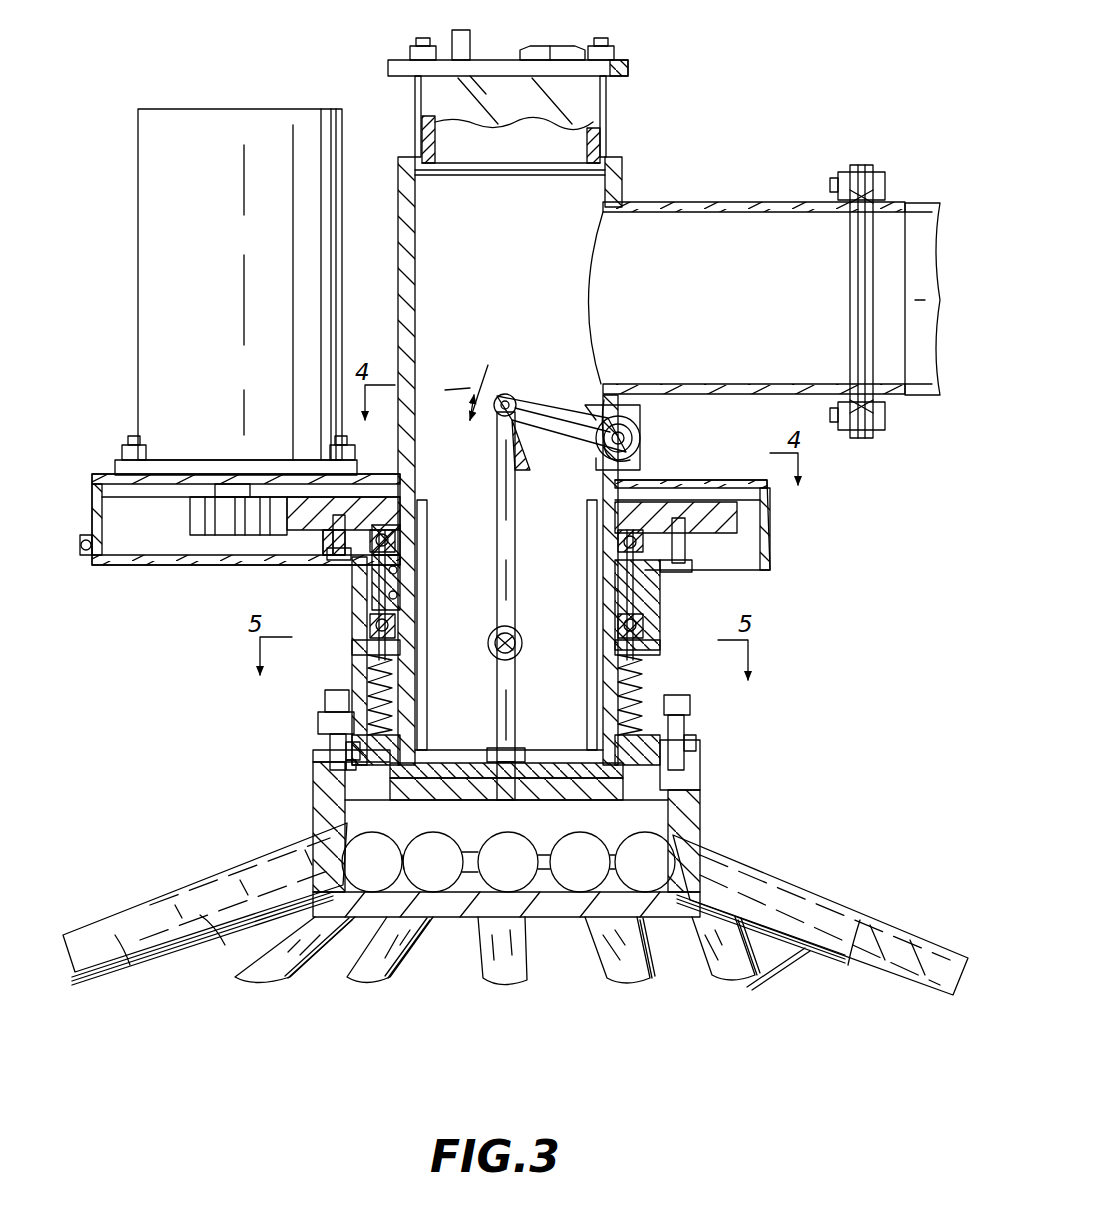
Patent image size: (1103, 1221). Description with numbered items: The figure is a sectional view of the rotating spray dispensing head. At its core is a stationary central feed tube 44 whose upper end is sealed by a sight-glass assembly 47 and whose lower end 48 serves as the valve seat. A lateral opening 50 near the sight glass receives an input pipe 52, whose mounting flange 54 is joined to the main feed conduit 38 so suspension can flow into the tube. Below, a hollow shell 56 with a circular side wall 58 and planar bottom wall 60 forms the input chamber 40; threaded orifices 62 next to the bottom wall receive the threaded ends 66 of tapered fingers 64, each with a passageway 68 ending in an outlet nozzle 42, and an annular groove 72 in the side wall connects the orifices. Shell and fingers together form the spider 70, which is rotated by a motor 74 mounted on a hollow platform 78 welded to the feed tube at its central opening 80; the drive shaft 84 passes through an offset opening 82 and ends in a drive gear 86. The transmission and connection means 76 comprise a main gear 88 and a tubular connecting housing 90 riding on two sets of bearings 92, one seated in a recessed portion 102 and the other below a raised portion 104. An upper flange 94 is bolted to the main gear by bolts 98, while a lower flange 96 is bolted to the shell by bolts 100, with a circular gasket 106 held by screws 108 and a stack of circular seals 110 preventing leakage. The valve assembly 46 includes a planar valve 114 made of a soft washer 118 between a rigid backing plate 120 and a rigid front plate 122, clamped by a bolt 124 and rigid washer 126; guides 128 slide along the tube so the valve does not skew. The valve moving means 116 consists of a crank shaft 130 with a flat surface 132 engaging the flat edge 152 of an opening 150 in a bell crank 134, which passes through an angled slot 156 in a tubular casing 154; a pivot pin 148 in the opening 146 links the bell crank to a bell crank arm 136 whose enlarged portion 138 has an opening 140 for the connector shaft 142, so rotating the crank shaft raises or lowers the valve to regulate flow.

The main feed conduit 38 is at (920, 220).
The input chamber 40 is at (558, 918).
The outlet nozzles 42 is at (950, 995).
The central feed tube 44 is at (398, 162).
The valve assembly 46 is at (585, 790).
The sight-glass assembly 47 is at (490, 80).
The lower end of the feed tube 48 is at (376, 817).
The lateral opening 50 is at (594, 260).
The input pipe 52 is at (640, 210).
The mounting flange 54 is at (860, 170).
The hollow shell 56 is at (700, 760).
The circular side wall 58 is at (690, 822).
The planar bottom wall 60 is at (600, 950).
The orifices 62 is at (455, 800).
The tapered fingers 64 is at (172, 960).
The threaded ends 66 is at (335, 930).
The passageway 68 is at (165, 912).
The spider 70 is at (700, 782).
The annular groove 72 is at (540, 862).
The motor 74 is at (230, 120).
The transmission and connection means 76 is at (345, 597).
The hollow platform 78 is at (100, 475).
The central opening 80 is at (395, 470).
The offset opening 82 is at (188, 470).
The drive shaft 84 is at (230, 478).
The drive gear 86 is at (190, 530).
The main gear 88 is at (285, 478).
The tubular connecting housing 90 is at (352, 620).
The bearings 92 is at (390, 540).
The upper flange 94 is at (330, 552).
The lower flange 96 is at (322, 718).
The bolts 98 is at (338, 562).
The bolts 100 is at (330, 710).
The recessed portion 102 is at (390, 528).
The raised portion 104 is at (398, 580).
The circular gasket 106 is at (345, 748).
The screws 108 is at (345, 768).
The stack of circular seals 110 is at (392, 690).
The planar valve 114 is at (438, 778).
The valve moving means 116 is at (548, 522).
The soft washer 118 is at (455, 790).
The rigid backing plate 120 is at (462, 770).
The rigid front plate 122 is at (340, 790).
The bolt 124 is at (528, 770).
The rigid washer 126 is at (515, 740).
The guides 128 is at (428, 615).
The crank shaft 130 is at (642, 440).
The flat surface 132 is at (525, 478).
The bell crank 134 is at (515, 396).
The bell crank arm 136 is at (495, 470).
The enlarged portion 138 is at (520, 630).
The opening 140 is at (520, 655).
The connector shaft 142 is at (516, 640).
The opening 146 is at (484, 385).
The pivot pin 148 is at (538, 451).
The opening 150 is at (640, 430).
The flat edge 152 is at (597, 405).
The tubular casing 154 is at (630, 430).
The angled slot 156 is at (604, 384).